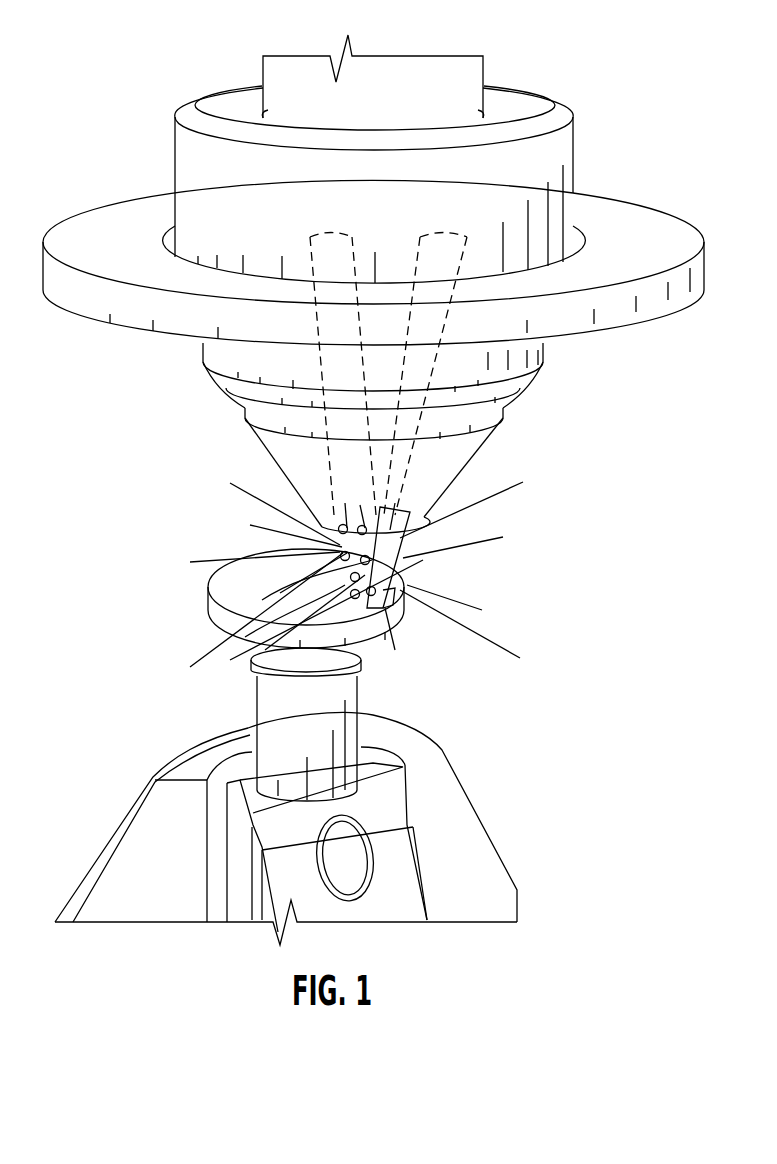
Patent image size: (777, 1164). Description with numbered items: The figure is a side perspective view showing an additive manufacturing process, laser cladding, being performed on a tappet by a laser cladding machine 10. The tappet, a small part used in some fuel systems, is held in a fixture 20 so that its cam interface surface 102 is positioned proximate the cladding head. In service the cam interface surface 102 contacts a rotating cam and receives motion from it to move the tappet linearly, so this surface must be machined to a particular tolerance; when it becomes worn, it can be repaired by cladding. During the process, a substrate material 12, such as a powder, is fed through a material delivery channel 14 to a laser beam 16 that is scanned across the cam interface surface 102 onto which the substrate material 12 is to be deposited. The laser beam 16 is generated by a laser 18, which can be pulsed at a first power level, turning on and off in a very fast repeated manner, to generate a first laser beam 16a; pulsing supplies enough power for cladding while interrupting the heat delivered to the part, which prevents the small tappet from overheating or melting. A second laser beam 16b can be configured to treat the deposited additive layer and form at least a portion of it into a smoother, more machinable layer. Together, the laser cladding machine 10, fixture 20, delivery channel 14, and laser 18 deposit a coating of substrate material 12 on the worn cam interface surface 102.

The laser cladding machine 10 is at (150, 76).
The material delivery channel 14 is at (324, 357).
The laser 18 is at (437, 373).
The laser beam 16 is at (407, 542).
The first laser beam 16a is at (403, 577).
The second laser beam 16b is at (427, 574).
The cam interface surface 102 is at (233, 592).
The substrate material 12 is at (257, 638).
The fixture 20 is at (270, 738).